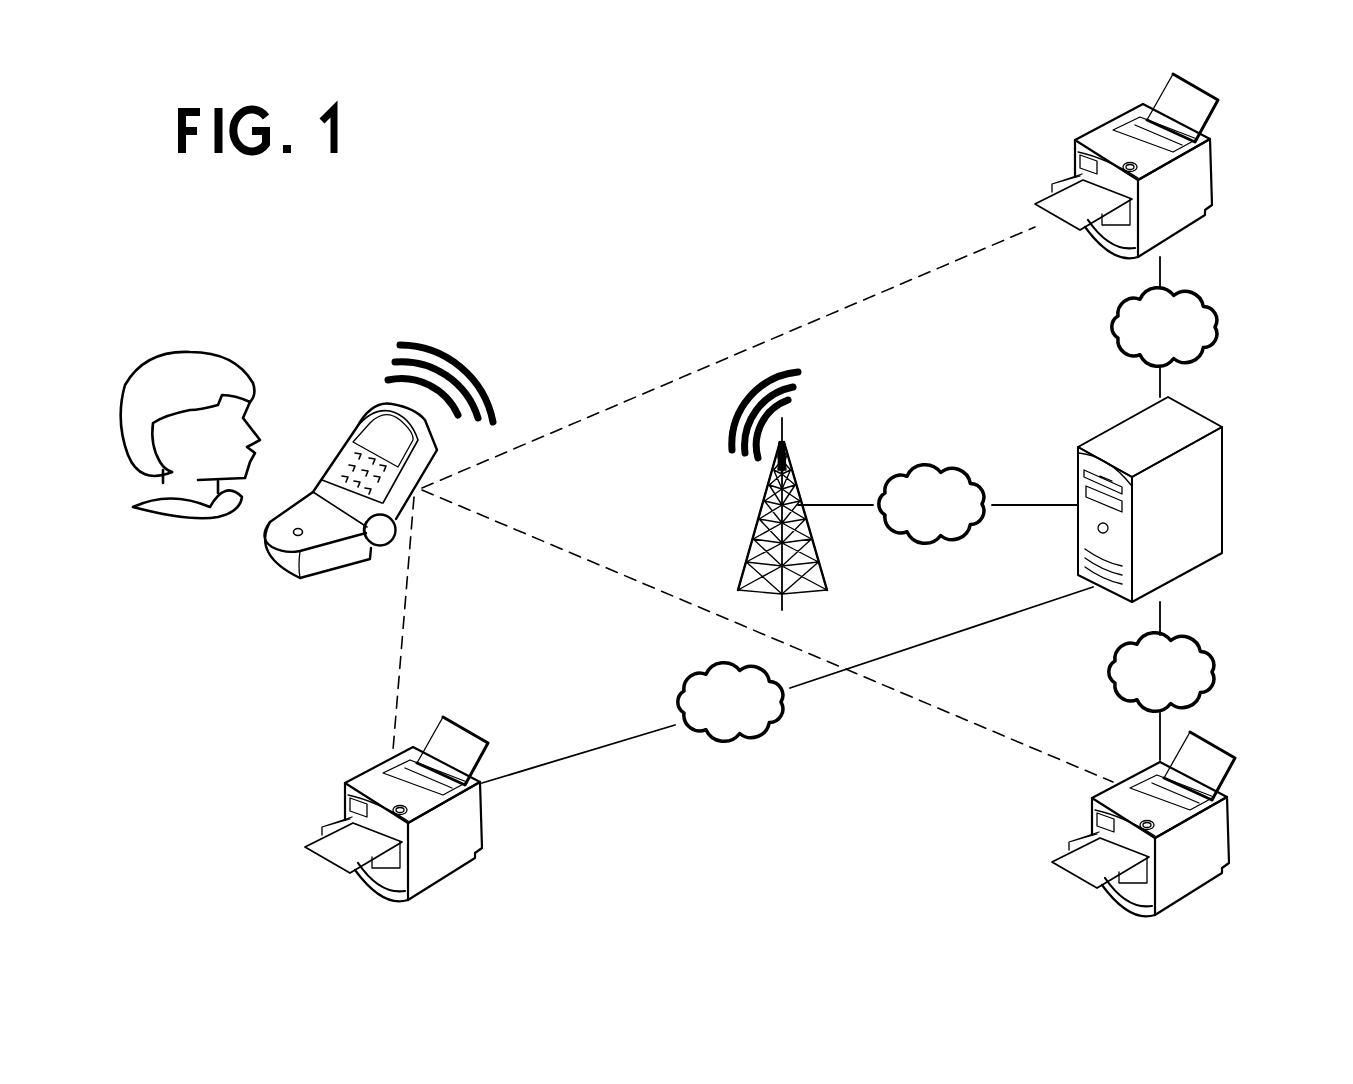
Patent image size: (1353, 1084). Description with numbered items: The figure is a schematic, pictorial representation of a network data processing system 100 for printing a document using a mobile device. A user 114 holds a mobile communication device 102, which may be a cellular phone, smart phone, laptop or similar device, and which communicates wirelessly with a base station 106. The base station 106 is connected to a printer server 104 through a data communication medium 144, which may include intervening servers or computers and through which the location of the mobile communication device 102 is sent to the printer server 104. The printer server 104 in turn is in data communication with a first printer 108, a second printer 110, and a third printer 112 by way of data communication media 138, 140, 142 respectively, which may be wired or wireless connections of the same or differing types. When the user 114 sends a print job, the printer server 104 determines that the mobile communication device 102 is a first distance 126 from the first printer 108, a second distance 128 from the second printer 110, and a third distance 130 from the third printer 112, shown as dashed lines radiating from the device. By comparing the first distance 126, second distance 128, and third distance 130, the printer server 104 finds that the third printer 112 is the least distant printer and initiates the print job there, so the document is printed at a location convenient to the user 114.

The network data processing system 100 is at (470, 212).
The mobile communication device 102 is at (310, 577).
The printer server 104 is at (1212, 512).
The base station 106 is at (753, 550).
The first printer 108 is at (1193, 186).
The second printer 110 is at (1210, 843).
The third printer 112 is at (458, 858).
The user 114 is at (172, 505).
The first distance 126 is at (616, 402).
The second distance 128 is at (580, 518).
The third distance 130 is at (410, 615).
The data communication medium 138 is at (1164, 327).
The data communication medium 140 is at (1161, 672).
The data communication medium 142 is at (730, 702).
The data communication medium 144 is at (931, 504).